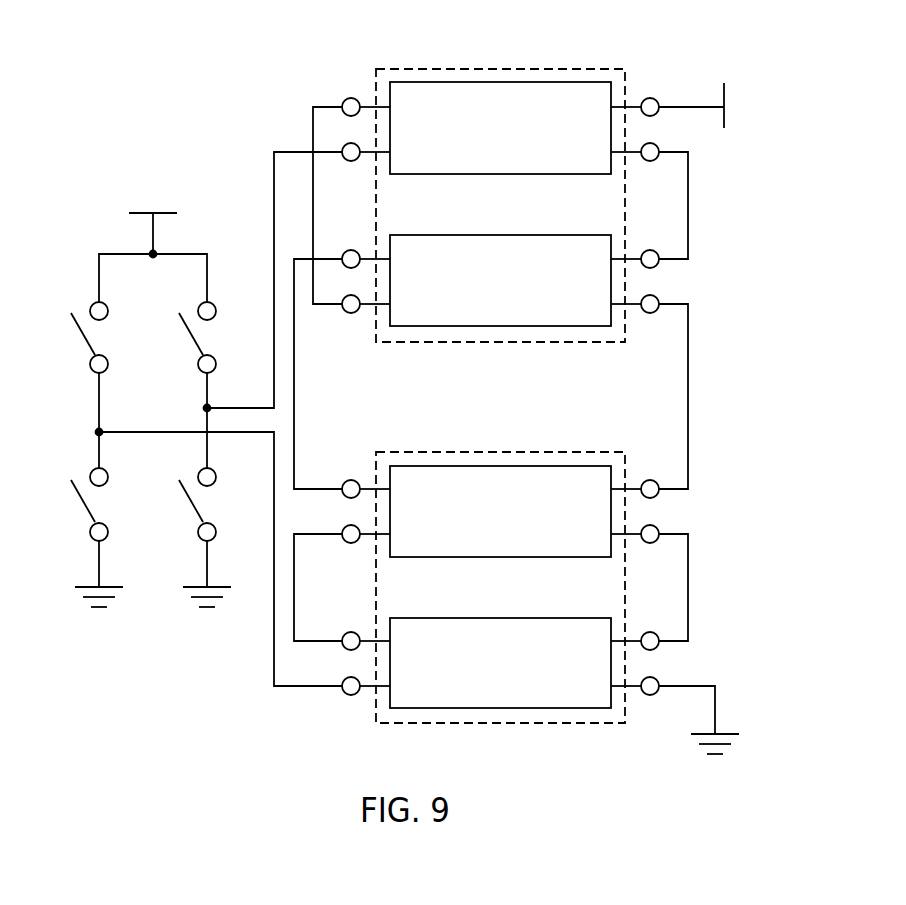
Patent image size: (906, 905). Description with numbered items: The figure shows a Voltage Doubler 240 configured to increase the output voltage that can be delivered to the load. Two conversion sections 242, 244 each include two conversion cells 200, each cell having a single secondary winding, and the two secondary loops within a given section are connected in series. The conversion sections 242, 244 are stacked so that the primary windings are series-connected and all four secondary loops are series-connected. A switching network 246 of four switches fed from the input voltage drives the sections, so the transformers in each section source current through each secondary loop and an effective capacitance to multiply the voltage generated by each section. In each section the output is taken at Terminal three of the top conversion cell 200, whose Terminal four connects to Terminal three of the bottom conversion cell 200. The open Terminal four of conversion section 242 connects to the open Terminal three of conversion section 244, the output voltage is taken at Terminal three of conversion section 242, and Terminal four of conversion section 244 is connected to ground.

The Voltage Doubler 240 is at (105, 39).
The conversion section 242 is at (500, 69).
The conversion section 244 is at (500, 452).
The switching network 246 is at (106, 207).
The conversion cell 200 is at (500, 174).